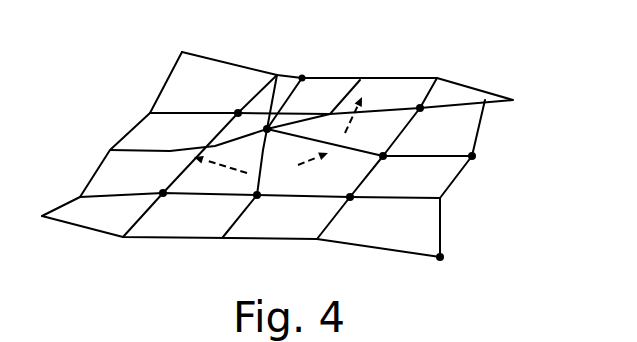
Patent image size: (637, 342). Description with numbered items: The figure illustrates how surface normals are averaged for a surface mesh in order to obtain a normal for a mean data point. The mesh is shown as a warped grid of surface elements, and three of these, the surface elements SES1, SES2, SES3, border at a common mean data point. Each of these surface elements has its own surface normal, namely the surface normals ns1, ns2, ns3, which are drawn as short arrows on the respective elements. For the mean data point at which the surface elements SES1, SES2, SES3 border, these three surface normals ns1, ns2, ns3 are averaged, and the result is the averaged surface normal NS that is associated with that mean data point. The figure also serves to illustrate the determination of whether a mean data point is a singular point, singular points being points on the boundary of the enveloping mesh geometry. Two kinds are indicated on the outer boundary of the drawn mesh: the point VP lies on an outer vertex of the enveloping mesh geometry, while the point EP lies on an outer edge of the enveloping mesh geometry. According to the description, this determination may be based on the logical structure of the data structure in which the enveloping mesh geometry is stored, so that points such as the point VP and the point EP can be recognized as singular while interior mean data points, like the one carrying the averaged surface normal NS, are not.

The averaged surface normal NS is at (297, 74).
The surface normal ns1 is at (331, 154).
The surface normal ns2 is at (362, 97).
The surface normal ns3 is at (231, 168).
The surface element SES1 is at (296, 172).
The surface element SES2 is at (393, 136).
The surface element SES3 is at (212, 172).
The point on an outer edge EP is at (474, 157).
The point on an outer vertex VP is at (442, 258).